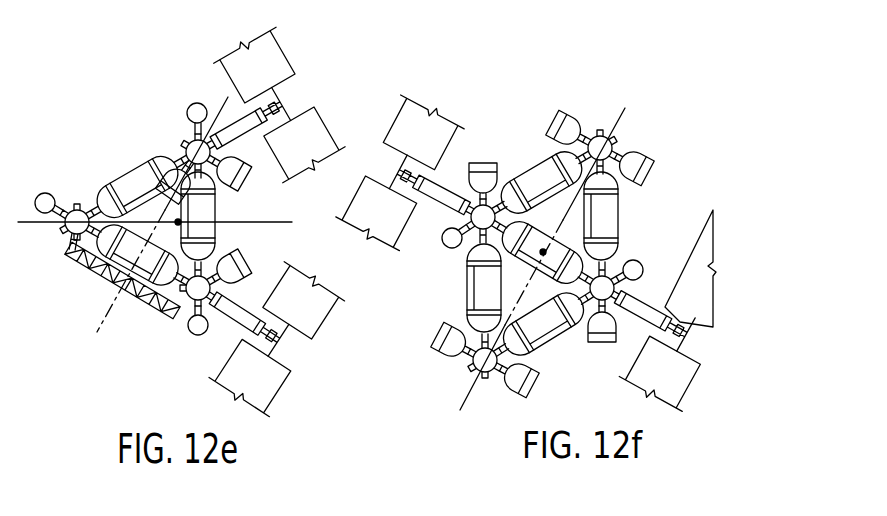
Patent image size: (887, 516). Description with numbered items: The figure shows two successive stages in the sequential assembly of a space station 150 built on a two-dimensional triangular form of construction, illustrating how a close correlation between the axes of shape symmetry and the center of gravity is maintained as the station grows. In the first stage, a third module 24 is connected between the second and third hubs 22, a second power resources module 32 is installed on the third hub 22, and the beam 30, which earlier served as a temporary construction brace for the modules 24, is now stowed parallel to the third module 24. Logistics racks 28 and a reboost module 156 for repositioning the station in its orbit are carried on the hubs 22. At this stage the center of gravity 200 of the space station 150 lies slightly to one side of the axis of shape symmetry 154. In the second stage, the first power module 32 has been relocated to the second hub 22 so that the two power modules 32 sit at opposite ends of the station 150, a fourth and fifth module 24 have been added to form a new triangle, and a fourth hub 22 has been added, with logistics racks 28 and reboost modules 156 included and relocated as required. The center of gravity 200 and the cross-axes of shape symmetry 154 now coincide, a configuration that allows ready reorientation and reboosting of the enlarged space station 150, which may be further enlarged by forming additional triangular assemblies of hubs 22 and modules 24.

In FIG. 12E, the space station 150 is at (124, 139).
In FIG. 12F, the space station 150 is at (507, 107).
In FIG. 12E, the hub 22 is at (186, 143).
In FIG. 12F, the hub 22 is at (489, 381).
In FIG. 12E, the module 24 is at (104, 276).
In FIG. 12F, the module 24 is at (468, 290).
In FIG. 12E, the logistics module 28 is at (204, 220).
In FIG. 12F, the logistics module 28 is at (488, 166).
In FIG. 12E, the beam 30 is at (137, 294).
In FIG. 12E, the power resources module 32 is at (283, 112).
In FIG. 12F, the power resources module 32 is at (440, 193).
In FIG. 12E, the axis of shape symmetry 154 is at (108, 311).
In FIG. 12F, the axis of shape symmetry 154 is at (386, 160).
In FIG. 12E, the reboost module 156 is at (58, 183).
In FIG. 12F, the reboost module 156 is at (452, 249).
In FIG. 12E, the center of gravity 200 is at (185, 221).
In FIG. 12F, the center of gravity 200 is at (548, 252).